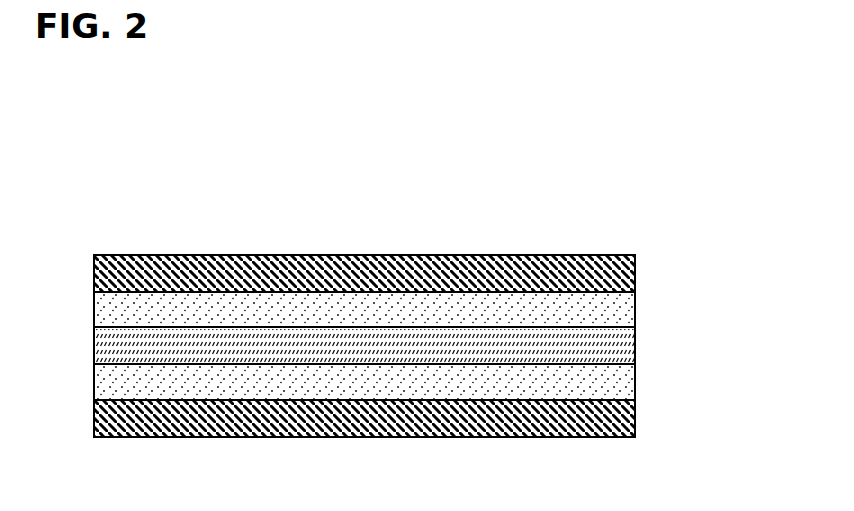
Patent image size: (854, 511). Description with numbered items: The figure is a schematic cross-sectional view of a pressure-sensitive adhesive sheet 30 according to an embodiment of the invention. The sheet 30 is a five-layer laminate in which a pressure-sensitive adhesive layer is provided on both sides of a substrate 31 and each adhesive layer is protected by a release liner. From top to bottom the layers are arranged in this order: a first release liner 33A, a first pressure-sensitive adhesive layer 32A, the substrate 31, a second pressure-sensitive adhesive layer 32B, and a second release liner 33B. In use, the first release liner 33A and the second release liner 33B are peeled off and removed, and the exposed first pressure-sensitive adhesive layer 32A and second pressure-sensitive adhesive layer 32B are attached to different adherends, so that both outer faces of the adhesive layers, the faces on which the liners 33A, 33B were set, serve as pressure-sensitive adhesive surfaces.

The pressure-sensitive adhesive sheet 30 is at (429, 284).
The substrate 31 is at (635, 347).
The first pressure-sensitive adhesive layer 32A is at (635, 308).
The second pressure-sensitive adhesive layer 32B is at (635, 383).
The first release liner 33A is at (635, 272).
The second release liner 33B is at (635, 419).